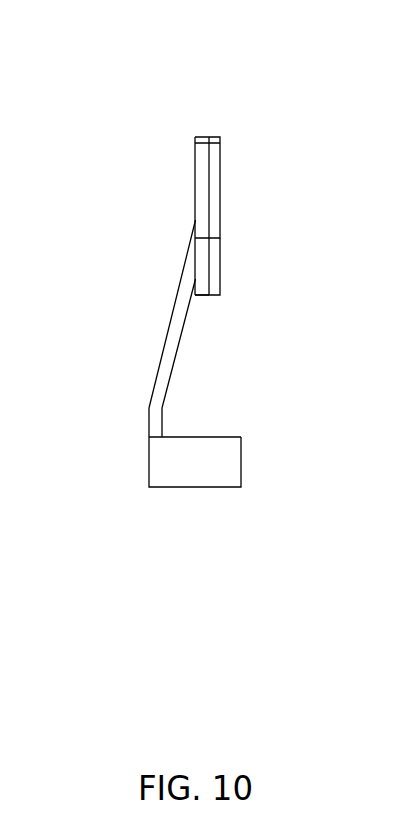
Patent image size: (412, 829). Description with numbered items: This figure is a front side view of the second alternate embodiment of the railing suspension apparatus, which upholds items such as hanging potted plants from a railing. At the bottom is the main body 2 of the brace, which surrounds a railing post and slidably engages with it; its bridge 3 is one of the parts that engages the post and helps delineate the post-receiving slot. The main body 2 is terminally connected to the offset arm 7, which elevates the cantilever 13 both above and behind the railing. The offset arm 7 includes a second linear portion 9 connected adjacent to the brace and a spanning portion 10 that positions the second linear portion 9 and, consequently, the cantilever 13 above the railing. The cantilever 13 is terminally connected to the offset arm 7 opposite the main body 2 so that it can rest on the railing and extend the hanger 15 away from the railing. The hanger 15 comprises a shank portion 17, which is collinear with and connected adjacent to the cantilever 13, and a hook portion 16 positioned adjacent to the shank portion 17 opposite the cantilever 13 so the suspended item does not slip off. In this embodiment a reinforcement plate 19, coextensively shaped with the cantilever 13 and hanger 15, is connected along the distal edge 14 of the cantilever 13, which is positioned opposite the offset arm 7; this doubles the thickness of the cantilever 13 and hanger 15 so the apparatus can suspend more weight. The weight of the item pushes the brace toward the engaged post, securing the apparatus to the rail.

The main body 2 is at (256, 449).
The bridge 3 is at (197, 473).
The offset arm 7 is at (178, 416).
The second linear portion 9 is at (154, 420).
The spanning portion 10 is at (172, 343).
The cantilever 13 is at (200, 124).
The distal edge 14 is at (209, 137).
The hanger 15 is at (180, 212).
The hook portion 16 is at (200, 292).
The shank portion 17 is at (203, 187).
The reinforcement plate 19 is at (219, 221).